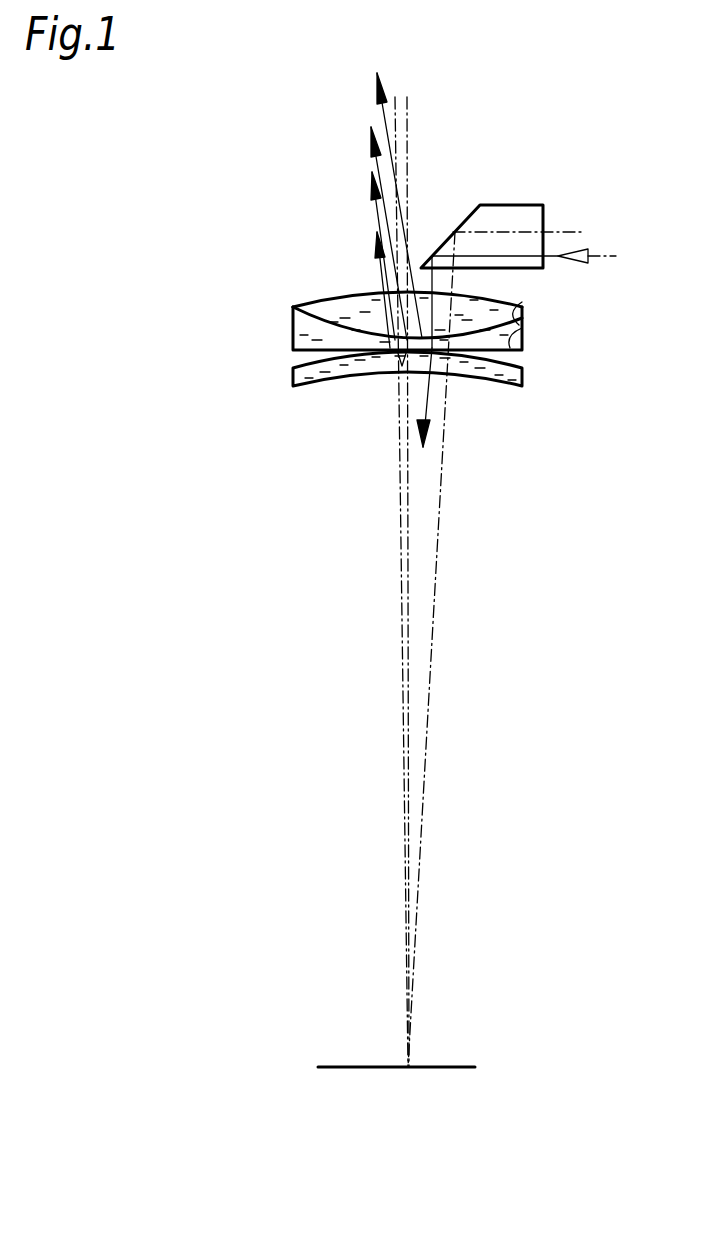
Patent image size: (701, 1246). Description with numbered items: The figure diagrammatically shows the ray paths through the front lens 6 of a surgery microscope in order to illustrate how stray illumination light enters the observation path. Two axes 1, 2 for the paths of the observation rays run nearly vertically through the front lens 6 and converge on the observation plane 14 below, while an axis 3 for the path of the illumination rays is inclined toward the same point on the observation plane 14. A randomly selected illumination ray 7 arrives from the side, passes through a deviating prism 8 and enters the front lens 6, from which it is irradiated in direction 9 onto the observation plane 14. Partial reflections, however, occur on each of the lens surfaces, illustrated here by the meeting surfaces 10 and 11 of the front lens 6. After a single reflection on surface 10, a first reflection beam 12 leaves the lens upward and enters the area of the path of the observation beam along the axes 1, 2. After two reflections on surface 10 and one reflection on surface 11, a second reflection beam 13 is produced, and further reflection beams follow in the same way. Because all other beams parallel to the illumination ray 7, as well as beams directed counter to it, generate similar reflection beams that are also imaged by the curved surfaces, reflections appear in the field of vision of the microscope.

The axis for the path of the observation rays 1 is at (395, 552).
The axis for the path of the observation rays 2 is at (395, 552).
The axis for the path of the illumination rays 3 is at (446, 467).
The front lens 6 is at (290, 345).
The illumination ray 7 is at (605, 257).
The deviating prism 8 is at (512, 204).
The direction of irradiation 9 is at (425, 395).
The lens surface 10 is at (523, 333).
The lens surface 11 is at (523, 322).
The first reflection beam 12 is at (383, 113).
The second reflection beam 13 is at (380, 168).
The observation plane 14 is at (455, 1064).